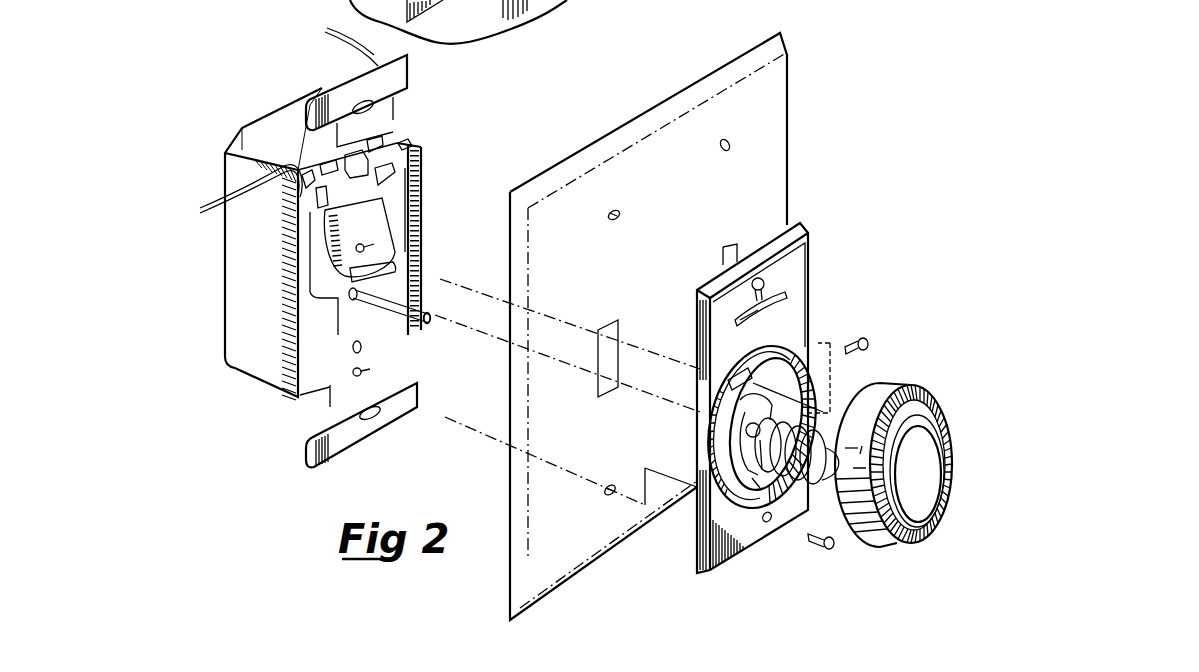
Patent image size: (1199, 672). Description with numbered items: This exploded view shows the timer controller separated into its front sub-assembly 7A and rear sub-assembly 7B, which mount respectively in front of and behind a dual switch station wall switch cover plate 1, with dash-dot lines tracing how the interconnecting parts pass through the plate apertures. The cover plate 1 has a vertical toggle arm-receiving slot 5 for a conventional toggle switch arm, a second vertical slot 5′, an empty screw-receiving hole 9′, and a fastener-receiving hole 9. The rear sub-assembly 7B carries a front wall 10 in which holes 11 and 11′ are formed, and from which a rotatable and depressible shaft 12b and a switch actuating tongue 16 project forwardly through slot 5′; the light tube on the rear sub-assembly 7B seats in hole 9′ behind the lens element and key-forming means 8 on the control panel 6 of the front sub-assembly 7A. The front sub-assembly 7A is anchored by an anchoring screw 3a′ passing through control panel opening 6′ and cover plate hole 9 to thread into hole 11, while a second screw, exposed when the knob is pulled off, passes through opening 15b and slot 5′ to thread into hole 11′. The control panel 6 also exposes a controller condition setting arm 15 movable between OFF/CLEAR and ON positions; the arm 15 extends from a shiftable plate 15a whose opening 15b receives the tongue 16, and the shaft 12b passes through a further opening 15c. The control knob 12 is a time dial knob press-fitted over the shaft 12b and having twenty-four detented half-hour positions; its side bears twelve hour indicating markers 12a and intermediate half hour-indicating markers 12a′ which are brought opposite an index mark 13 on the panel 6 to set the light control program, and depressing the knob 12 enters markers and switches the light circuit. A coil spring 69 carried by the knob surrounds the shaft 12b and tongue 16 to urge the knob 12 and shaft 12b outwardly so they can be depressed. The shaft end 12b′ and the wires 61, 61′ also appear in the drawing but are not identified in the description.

The wall switch cover plate 1 is at (791, 61).
The anchoring screw 3a′ is at (829, 550).
The vertical toggle arm-receiving slot 5 is at (733, 248).
The vertical cover plate slot 5′ is at (612, 320).
The control panel 6 is at (805, 316).
The control panel opening 6′ is at (768, 522).
The front sub-assembly 7A is at (803, 223).
The rear sub-assembly 7B is at (249, 129).
The lens element and key-forming means 8 is at (765, 283).
The cover plate fastener-receiving hole 9 is at (608, 495).
The empty screw-receiving hole 9′ is at (622, 210).
The front wall 10 is at (317, 363).
The hole 11 is at (362, 372).
The hole 11′ is at (370, 245).
The control knob 12 is at (945, 419).
The hour indicating markers 12a is at (909, 398).
The half hour-indicating markers 12a′ is at (850, 440).
The rotatable and depressible shaft 12b is at (350, 292).
The shaft end 12b′ is at (429, 312).
The index mark 13 is at (766, 348).
The controller condition setting arm 15 is at (772, 291).
The shiftable plate 15a is at (745, 465).
The opening 15b is at (746, 433).
The opening 15c is at (757, 480).
The switch actuating tongue 16 is at (395, 266).
The lead wire 61 is at (344, 50).
The lead wire 61′ is at (228, 200).
The coil spring 69 is at (797, 474).